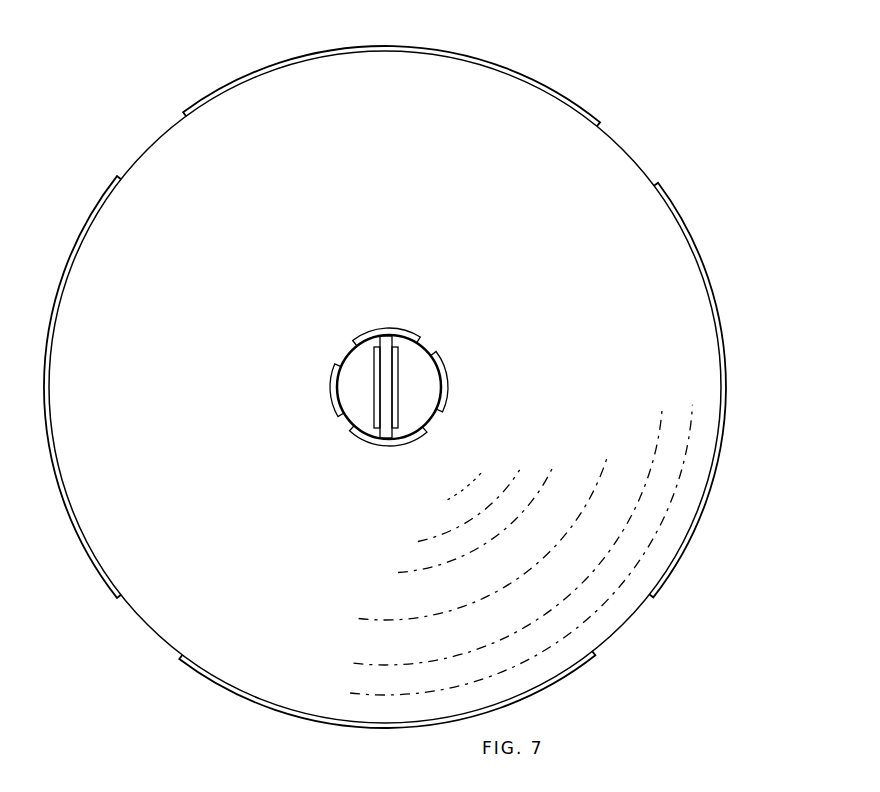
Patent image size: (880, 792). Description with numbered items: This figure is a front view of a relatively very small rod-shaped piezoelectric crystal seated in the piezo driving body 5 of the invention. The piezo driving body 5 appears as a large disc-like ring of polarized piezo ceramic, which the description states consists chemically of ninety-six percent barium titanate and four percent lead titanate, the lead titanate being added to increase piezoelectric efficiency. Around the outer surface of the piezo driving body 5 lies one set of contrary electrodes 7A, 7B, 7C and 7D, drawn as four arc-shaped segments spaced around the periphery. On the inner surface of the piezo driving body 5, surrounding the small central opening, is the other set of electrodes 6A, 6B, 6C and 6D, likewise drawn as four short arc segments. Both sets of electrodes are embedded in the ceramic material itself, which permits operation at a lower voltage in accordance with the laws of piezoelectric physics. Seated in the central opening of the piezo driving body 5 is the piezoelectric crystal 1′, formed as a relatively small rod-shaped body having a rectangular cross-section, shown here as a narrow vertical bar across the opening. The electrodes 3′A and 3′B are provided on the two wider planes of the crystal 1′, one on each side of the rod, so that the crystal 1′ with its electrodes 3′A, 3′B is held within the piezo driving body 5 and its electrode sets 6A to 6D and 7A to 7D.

The piezo driving body 5 is at (599, 164).
The outer electrode 7A is at (582, 108).
The outer electrode 7B is at (708, 276).
The outer electrode 7C is at (557, 685).
The outer electrode 7D is at (102, 578).
The piezoelectric crystal 1′ is at (384, 342).
The electrode 3′A is at (395, 385).
The electrode 3′B is at (377, 380).
The inner electrode 6A is at (359, 335).
The inner electrode 6B is at (448, 375).
The inner electrode 6C is at (395, 444).
The inner electrode 6D is at (330, 378).